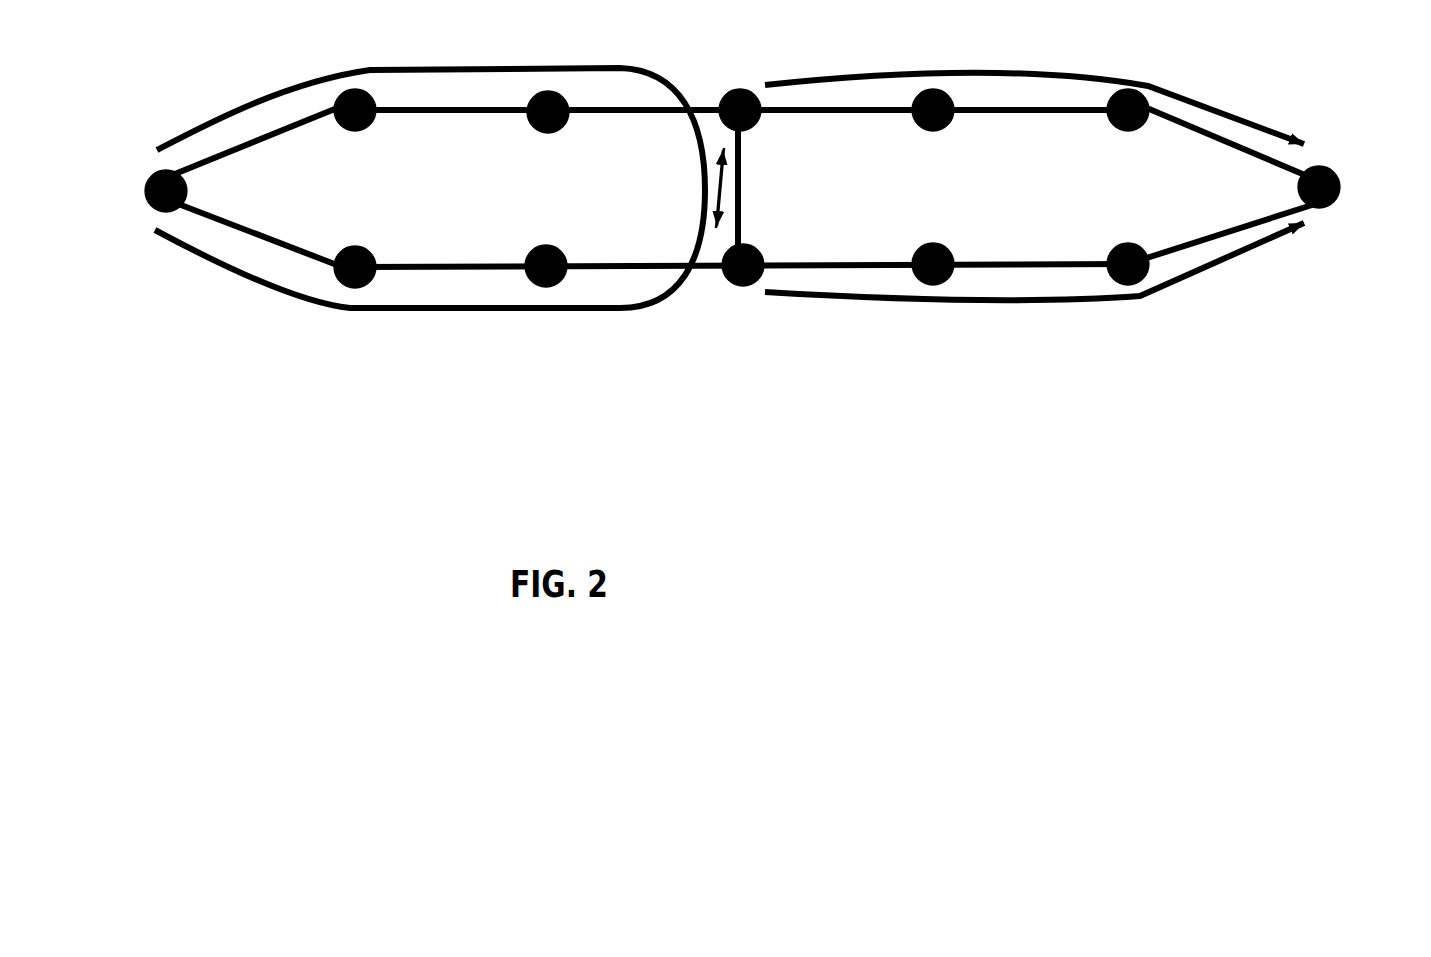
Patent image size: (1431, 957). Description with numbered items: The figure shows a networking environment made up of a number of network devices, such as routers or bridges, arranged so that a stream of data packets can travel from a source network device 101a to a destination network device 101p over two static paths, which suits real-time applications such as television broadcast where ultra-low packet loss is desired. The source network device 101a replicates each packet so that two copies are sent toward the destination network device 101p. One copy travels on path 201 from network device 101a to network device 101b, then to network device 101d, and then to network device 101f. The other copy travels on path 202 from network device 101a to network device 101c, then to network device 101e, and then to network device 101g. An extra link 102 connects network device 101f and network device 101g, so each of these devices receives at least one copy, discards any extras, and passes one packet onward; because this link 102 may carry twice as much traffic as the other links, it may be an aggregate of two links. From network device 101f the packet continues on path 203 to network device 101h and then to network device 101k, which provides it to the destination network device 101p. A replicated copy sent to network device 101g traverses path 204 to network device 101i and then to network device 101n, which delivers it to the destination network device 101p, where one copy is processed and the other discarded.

The network device 101a is at (205, 163).
The network device 101b is at (400, 83).
The network device 101c is at (394, 299).
The network device 101d is at (593, 84).
The network device 101e is at (585, 298).
The network device 101f is at (784, 83).
The network device 101g is at (784, 298).
The network device 101h is at (976, 83).
The network device 101i is at (973, 297).
The network device 101k is at (1174, 83).
The network device 101n is at (1169, 297).
The network device 101p is at (1364, 161).
The link 102 is at (777, 187).
The path 201 is at (431, 100).
The path 202 is at (430, 289).
The path 203 is at (1034, 77).
The path 204 is at (1034, 299).